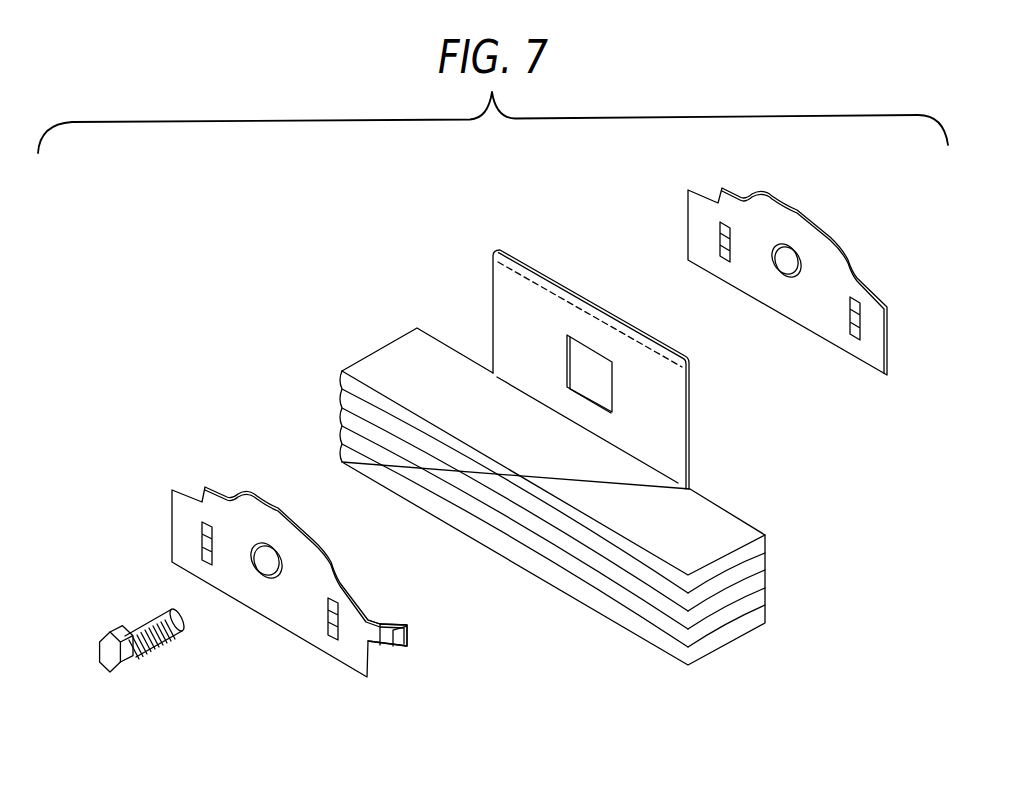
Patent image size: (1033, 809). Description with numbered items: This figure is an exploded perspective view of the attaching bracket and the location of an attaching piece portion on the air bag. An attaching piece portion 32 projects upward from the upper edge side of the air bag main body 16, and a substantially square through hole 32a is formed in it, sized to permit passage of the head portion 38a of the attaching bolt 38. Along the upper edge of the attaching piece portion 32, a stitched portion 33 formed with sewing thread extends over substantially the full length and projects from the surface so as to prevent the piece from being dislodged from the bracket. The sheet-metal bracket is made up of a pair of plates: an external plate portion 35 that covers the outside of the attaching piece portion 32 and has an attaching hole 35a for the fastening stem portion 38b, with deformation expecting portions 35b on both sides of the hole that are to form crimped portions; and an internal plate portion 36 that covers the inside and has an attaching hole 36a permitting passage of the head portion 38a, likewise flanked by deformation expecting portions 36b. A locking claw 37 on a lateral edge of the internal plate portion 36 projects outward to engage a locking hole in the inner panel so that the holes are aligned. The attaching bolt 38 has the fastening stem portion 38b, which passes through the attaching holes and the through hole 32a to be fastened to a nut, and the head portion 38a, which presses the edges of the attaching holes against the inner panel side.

The air bag main body 16 is at (758, 512).
The attaching piece portion 32 is at (498, 305).
The through hole 32a is at (567, 373).
The stitched portion 33 is at (545, 282).
The external plate portion 35 is at (789, 267).
The attaching hole 35a is at (796, 260).
The deformation expecting portion 35b is at (718, 240).
The internal plate portion 36 is at (292, 552).
The attaching hole 36a is at (274, 557).
The deformation expecting portion 36b is at (202, 541).
The locking claw 37 is at (407, 639).
The attaching bolt 38 is at (143, 672).
The head portion 38a is at (108, 662).
The fastening stem portion 38b is at (173, 633).